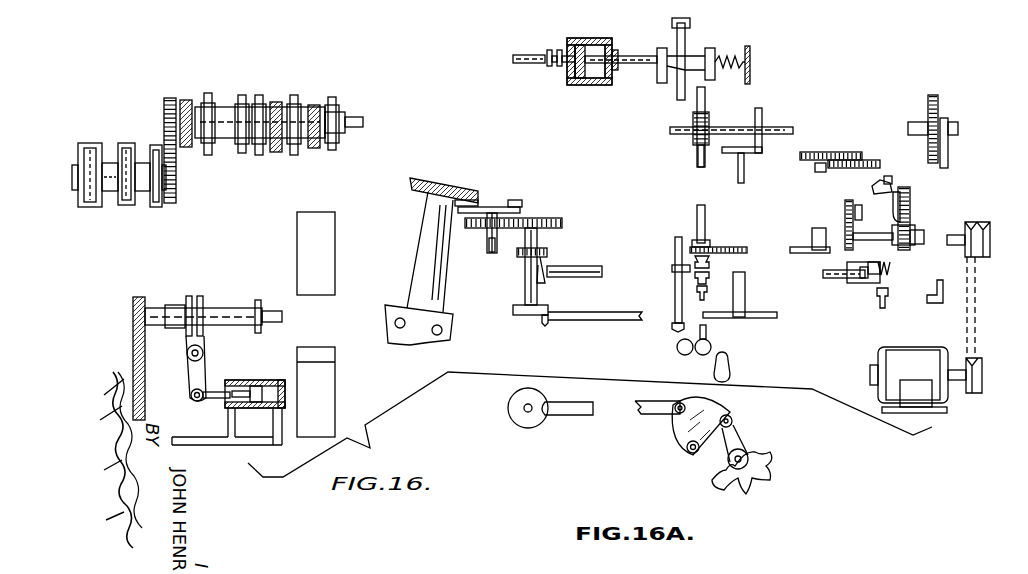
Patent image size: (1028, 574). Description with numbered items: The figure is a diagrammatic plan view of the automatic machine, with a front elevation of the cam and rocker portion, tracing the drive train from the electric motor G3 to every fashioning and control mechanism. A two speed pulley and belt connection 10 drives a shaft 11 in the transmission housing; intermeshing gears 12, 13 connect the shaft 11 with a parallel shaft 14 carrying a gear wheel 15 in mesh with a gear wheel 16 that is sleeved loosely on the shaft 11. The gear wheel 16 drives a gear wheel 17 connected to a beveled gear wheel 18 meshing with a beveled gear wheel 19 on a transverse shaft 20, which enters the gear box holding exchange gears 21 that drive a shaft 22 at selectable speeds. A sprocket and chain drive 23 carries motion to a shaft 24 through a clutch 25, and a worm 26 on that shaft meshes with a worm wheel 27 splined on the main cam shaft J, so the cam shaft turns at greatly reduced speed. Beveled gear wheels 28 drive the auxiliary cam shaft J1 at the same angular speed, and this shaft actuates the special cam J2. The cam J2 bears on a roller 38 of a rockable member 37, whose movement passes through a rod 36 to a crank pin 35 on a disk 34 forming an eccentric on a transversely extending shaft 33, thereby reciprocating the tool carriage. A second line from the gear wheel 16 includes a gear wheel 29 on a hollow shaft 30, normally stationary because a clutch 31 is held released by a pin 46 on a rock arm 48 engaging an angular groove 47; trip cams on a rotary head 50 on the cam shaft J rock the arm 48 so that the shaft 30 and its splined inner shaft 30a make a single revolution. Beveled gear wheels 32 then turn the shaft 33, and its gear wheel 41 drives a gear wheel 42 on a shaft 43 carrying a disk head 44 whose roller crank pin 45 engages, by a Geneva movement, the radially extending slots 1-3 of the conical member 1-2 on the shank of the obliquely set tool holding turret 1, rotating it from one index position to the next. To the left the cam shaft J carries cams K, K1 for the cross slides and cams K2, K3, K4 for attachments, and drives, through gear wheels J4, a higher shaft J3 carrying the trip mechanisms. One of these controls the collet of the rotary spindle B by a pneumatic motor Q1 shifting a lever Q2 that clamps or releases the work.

In FIG. 16, the main cam shaft J is at (353, 119).
In FIG. 16, the auxiliary cam shaft J1 is at (745, 176).
In FIG. 16A, the auxiliary cam shaft J1 is at (746, 452).
In FIG. 16, the special cam J2 is at (762, 319).
In FIG. 16A, the special cam J2 is at (772, 460).
In FIG. 16, the trip mechanism shaft J3 is at (102, 149).
In FIG. 16, the gear wheels J4 is at (164, 125).
In FIG. 16, the cam K is at (333, 97).
In FIG. 16, the cam K1 is at (295, 95).
In FIG. 16, the cam K2 is at (259, 95).
In FIG. 16, the cam K3 is at (242, 95).
In FIG. 16, the cam K4 is at (208, 93).
In FIG. 16, the rotary spindle B is at (230, 308).
In FIG. 16, the pneumatic motor Q1 is at (262, 380).
In FIG. 16, the lever Q2 is at (206, 370).
In FIG. 16, the arm 1 is at (425, 240).
In FIG. 16, the arm head plate 1-2 is at (468, 193).
In FIG. 16, the arm head 1-3 is at (408, 182).
In FIG. 16, the disk head 44 is at (490, 207).
In FIG. 16, the roller crank pin 45 is at (528, 203).
In FIG. 16, the gear wheel 41 is at (563, 223).
In FIG. 16, the gear wheel 42 is at (486, 232).
In FIG. 16, the shaft 43 is at (487, 250).
In FIG. 16, the transversely extending shaft 33 is at (525, 282).
In FIG. 16, the beveled gear wheels 32 is at (548, 258).
In FIG. 16, the shaft 30a is at (579, 285).
In FIG. 16, the disk 34 is at (520, 316).
In FIG. 16A, the disk 34 is at (533, 428).
In FIG. 16, the crank pin 35 is at (545, 327).
In FIG. 16, the rod 36 is at (598, 321).
In FIG. 16A, the rod 36 is at (593, 416).
In FIG. 16, the worm 26 is at (708, 116).
In FIG. 16, the worm wheel 27 is at (697, 150).
In FIG. 16, the beveled gear wheels 28 is at (762, 115).
In FIG. 16, the exchange gears 21 is at (845, 147).
In FIG. 16, the shaft 22 is at (815, 172).
In FIG. 16, the rotary head 50 is at (940, 126).
In FIG. 16, the shaft 20 is at (880, 180).
In FIG. 16, the beveled gear wheel 19 is at (887, 176).
In FIG. 16, the beveled gear wheel 18 is at (898, 192).
In FIG. 16, the gear wheel 17 is at (911, 198).
In FIG. 16, the gear 13 is at (846, 210).
In FIG. 16, the shaft 14 is at (858, 205).
In FIG. 16, the gear 12 is at (852, 234).
In FIG. 16, the gear wheel 15 is at (912, 222).
In FIG. 16, the shaft 11 is at (963, 238).
In FIG. 16, the gear wheel 16 is at (915, 246).
In FIG. 16, the angular groove 47 is at (877, 258).
In FIG. 16, the gear wheel 29 is at (893, 270).
In FIG. 16, the hollow shaft 30 is at (836, 279).
In FIG. 16, the clutch 31 is at (856, 284).
In FIG. 16, the pin 46 is at (880, 306).
In FIG. 16, the rock arm 48 is at (926, 300).
In FIG. 16, the sprocket and chain drive 23 is at (806, 253).
In FIG. 16, the shaft 24 is at (706, 216).
In FIG. 16, the clutch 25 is at (718, 273).
In FIG. 16, the two speed pulley and belt connection 10 is at (975, 300).
In FIG. 16, the electric motor G3 is at (945, 340).
In FIG. 16A, the rockable member 37 is at (682, 432).
In FIG. 16A, the roller 38 is at (733, 413).